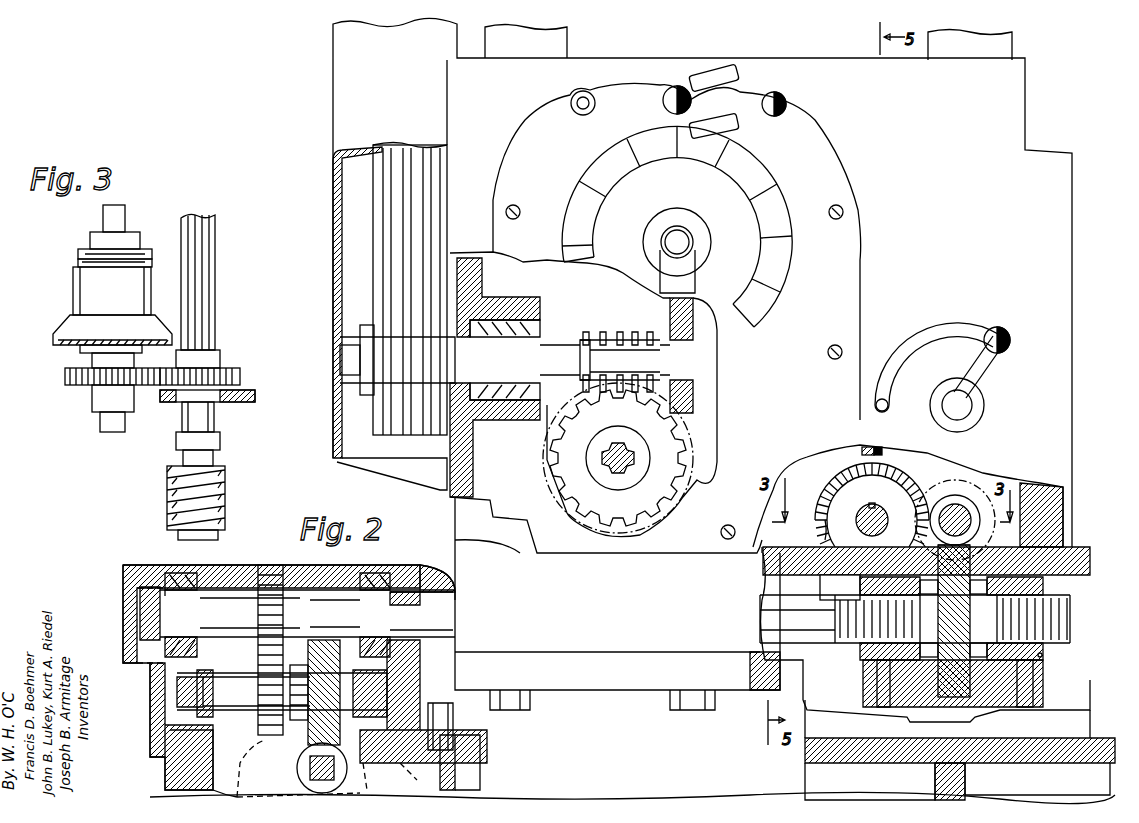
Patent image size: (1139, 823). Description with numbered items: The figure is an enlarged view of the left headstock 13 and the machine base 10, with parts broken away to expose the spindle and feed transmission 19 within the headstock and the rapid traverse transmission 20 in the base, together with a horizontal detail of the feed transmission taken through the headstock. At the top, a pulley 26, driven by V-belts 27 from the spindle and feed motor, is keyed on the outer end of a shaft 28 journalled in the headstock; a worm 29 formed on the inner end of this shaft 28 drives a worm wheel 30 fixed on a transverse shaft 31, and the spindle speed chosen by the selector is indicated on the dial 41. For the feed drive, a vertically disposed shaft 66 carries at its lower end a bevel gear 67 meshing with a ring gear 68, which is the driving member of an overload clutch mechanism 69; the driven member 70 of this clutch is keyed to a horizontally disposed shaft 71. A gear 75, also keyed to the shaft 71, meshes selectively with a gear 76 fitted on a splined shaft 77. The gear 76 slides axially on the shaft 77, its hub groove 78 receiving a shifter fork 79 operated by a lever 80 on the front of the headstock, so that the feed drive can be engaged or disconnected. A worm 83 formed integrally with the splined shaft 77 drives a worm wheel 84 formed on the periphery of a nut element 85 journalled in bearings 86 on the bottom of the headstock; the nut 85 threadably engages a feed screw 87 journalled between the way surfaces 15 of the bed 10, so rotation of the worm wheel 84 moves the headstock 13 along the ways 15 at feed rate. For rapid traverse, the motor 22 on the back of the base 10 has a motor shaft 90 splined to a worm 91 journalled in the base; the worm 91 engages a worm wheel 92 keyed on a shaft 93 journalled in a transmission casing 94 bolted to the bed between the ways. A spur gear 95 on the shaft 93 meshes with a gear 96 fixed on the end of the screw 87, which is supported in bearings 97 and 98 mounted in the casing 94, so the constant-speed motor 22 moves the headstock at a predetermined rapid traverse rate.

In FIG. 2, the machine base 10 is at (1045, 765).
In FIG. 2, the left headstock 13 is at (1043, 135).
In FIG. 2, the way surfaces 15 is at (455, 622).
In FIG. 2, the headstock transmission 19 is at (962, 467).
In FIG. 2, the rapid traverse transmission 20 is at (160, 768).
In FIG. 2, the rapid traverse motor 22 is at (460, 762).
In FIG. 2, the pulley 26 is at (372, 298).
In FIG. 2, the V-belts 27 is at (388, 220).
In FIG. 2, the shaft 28 is at (553, 344).
In FIG. 2, the worm 29 is at (620, 344).
In FIG. 2, the worm wheel 30 is at (670, 434).
In FIG. 2, the shaft 31 is at (600, 455).
In FIG. 2, the dial 41 is at (745, 150).
In FIG. 2, the vertically disposed shaft 66 is at (868, 447).
In FIG. 2, the bevel gear 67 is at (883, 455).
In FIG. 3, the ring gear 68 is at (55, 328).
In FIG. 2, the ring gear 68 is at (840, 480).
In FIG. 3, the overload clutch mechanism 69 is at (88, 316).
In FIG. 3, the driven member 70 is at (138, 230).
In FIG. 3, the horizontally disposed shaft 71 is at (103, 212).
In FIG. 2, the horizontally disposed shaft 71 is at (858, 518).
In FIG. 3, the gear 75 is at (65, 378).
In FIG. 2, the gear 75 is at (905, 520).
In FIG. 3, the gear 76 is at (248, 362).
In FIG. 2, the gear 76 is at (960, 505).
In FIG. 3, the splined shaft 77 is at (215, 320).
In FIG. 2, the splined shaft 77 is at (972, 515).
In FIG. 3, the groove 78 is at (205, 406).
In FIG. 3, the shifter fork 79 is at (256, 396).
In FIG. 2, the lever 80 is at (980, 372).
In FIG. 3, the worm 83 is at (225, 472).
In FIG. 2, the worm 83 is at (935, 522).
In FIG. 2, the worm wheel 84 is at (975, 722).
In FIG. 2, the nut element 85 is at (1043, 660).
In FIG. 2, the bearings 86 is at (924, 638).
In FIG. 2, the feed screw 87 is at (1060, 612).
In FIG. 2, the motor shaft 90 is at (297, 768).
In FIG. 2, the worm 91 is at (310, 778).
In FIG. 2, the worm wheel 92 is at (312, 745).
In FIG. 2, the shaft 93 is at (177, 692).
In FIG. 2, the transmission casing 94 is at (425, 578).
In FIG. 2, the spur gear 95 is at (290, 715).
In FIG. 2, the gear 96 is at (268, 580).
In FIG. 2, the bearing 97 is at (180, 565).
In FIG. 2, the bearing 98 is at (390, 573).